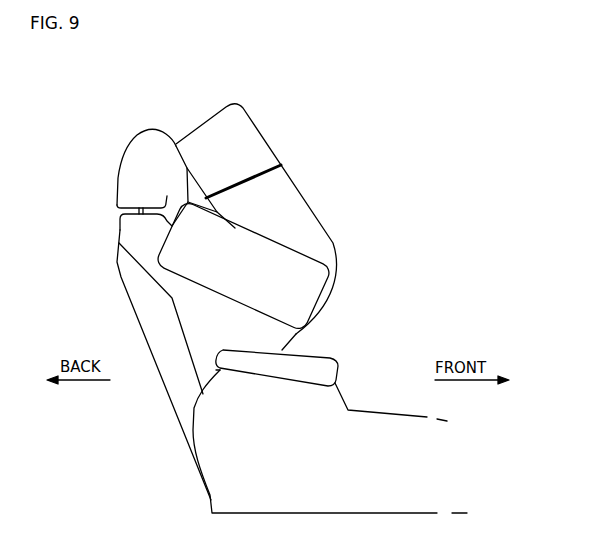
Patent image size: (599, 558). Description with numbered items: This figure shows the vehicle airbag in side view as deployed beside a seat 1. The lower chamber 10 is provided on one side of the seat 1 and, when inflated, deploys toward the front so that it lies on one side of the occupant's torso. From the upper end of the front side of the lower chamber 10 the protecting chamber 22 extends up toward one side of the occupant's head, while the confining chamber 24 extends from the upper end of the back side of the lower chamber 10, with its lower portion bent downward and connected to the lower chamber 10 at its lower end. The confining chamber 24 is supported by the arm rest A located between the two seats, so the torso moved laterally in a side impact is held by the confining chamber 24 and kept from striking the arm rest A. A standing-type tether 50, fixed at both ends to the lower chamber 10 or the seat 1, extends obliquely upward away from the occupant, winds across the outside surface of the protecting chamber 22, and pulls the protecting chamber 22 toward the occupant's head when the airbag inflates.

The seat 1 is at (137, 233).
The lower chamber 10 is at (207, 331).
The protecting chamber 22 is at (240, 120).
The confining chamber 24 is at (290, 268).
The standing-type tether 50 is at (248, 180).
The arm rest A is at (327, 365).